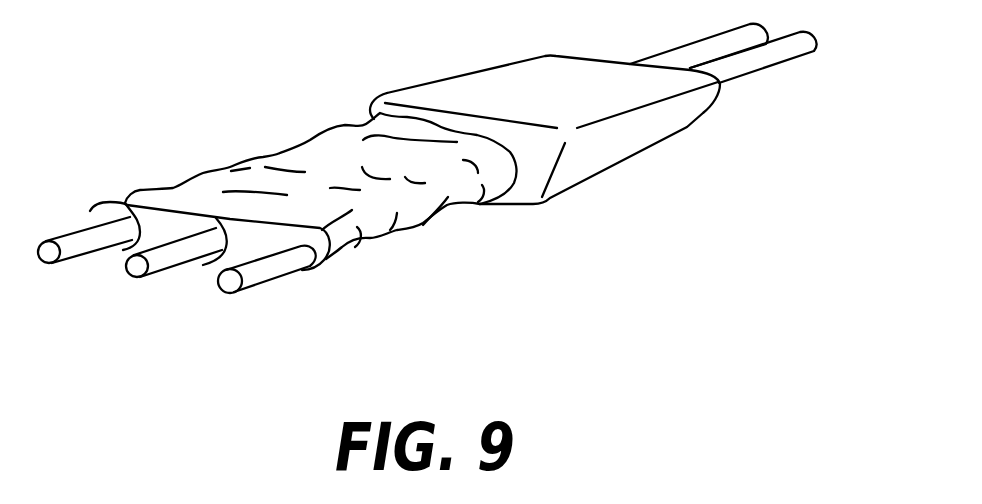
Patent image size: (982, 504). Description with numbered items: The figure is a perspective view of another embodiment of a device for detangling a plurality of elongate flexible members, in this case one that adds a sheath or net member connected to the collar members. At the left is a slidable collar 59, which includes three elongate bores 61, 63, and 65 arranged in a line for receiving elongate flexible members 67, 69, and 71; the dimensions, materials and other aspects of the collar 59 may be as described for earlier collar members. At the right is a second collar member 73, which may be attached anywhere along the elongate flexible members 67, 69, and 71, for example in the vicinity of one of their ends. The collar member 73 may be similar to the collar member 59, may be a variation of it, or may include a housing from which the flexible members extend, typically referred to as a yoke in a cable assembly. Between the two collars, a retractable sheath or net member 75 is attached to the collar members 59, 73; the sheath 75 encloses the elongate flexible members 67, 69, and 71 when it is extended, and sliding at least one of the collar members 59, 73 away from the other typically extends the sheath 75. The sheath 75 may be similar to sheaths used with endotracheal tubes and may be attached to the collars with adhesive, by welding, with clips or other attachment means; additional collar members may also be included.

The slidable collar 59 is at (237, 247).
The elongate bore 61 is at (125, 203).
The elongate bore 63 is at (216, 218).
The elongate bore 65 is at (342, 252).
The elongate flexible member 67 is at (72, 246).
The elongate flexible member 69 is at (163, 263).
The elongate flexible member 71 is at (288, 263).
The second collar member 73 is at (608, 148).
The retractable sheath or net member 75 is at (422, 222).